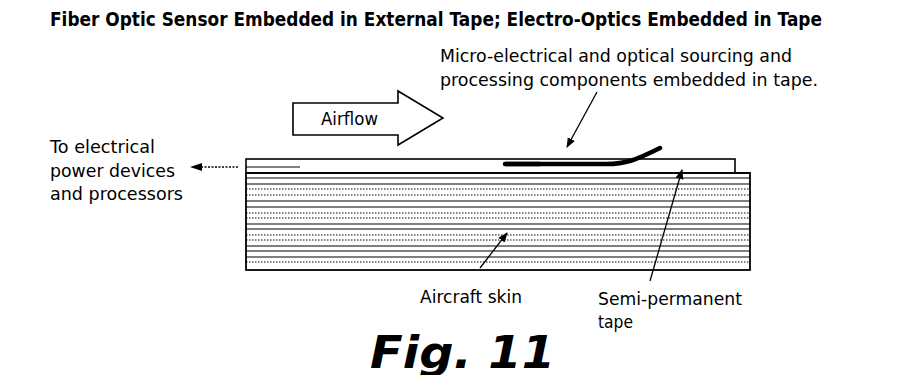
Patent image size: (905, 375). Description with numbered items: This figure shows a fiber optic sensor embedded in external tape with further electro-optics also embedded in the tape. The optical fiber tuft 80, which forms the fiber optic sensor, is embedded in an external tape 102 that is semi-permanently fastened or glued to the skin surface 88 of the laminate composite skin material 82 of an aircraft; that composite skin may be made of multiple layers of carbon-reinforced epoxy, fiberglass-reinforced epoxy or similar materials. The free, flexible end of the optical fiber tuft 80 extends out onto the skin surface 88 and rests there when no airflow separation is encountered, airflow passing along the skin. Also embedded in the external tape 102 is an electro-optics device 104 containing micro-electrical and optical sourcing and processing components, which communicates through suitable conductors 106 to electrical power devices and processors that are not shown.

The optical fiber tuft 80 is at (652, 148).
The laminate composite skin material 82 is at (336, 272).
The skin surface 88 is at (746, 172).
The external tape 102 is at (697, 159).
The electro-optics device 104 is at (516, 162).
The conductors 106 is at (269, 168).